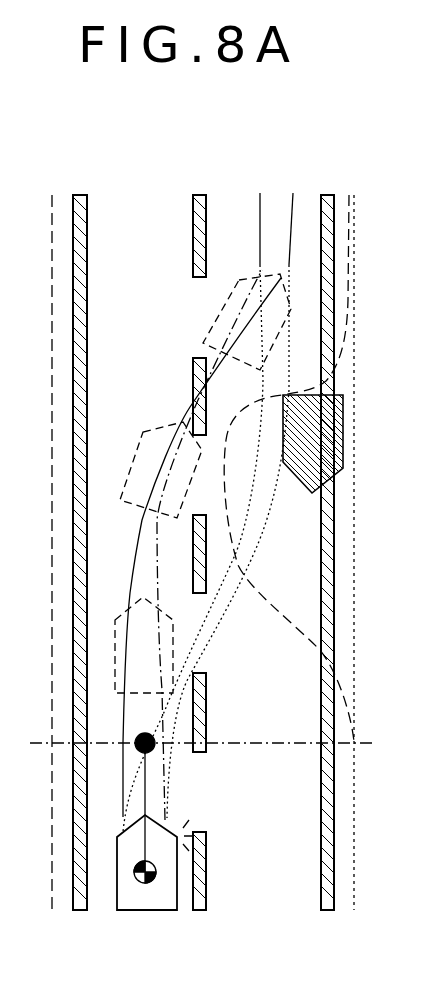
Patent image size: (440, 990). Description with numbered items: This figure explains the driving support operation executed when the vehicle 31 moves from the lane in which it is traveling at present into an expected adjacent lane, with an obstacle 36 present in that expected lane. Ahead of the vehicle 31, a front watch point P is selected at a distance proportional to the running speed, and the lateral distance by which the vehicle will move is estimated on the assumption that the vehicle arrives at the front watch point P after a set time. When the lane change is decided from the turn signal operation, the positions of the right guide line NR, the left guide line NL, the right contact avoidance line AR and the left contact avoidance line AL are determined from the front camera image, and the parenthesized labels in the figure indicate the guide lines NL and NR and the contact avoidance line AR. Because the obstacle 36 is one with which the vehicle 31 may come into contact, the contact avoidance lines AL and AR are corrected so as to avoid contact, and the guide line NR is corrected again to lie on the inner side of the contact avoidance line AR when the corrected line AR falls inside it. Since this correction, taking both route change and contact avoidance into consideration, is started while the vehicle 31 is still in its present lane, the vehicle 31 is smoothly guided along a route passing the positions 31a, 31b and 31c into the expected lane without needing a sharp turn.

The vehicle 31 is at (177, 910).
The position 31a is at (118, 618).
The position 31b is at (140, 452).
The position 31c is at (217, 318).
The obstacle 36 is at (312, 493).
The front watch point P is at (143, 730).
The left contact avoidance line AL is at (52, 195).
The right contact avoidance line AR is at (352, 195).
The left guide line NL is at (260, 193).
The right guide line NR is at (293, 193).